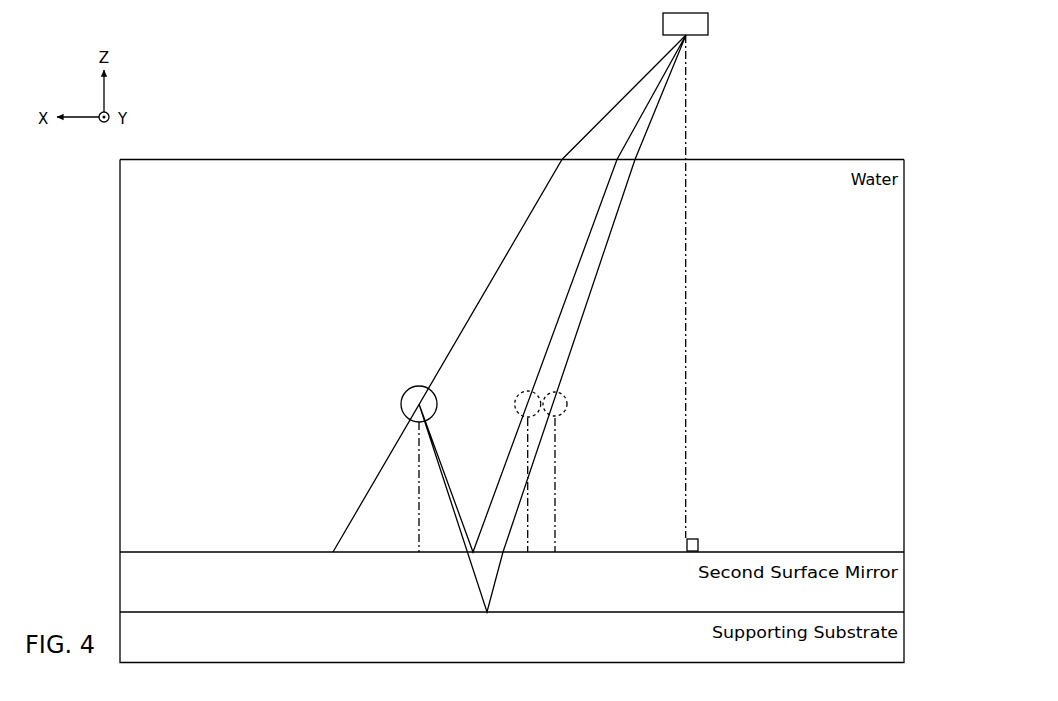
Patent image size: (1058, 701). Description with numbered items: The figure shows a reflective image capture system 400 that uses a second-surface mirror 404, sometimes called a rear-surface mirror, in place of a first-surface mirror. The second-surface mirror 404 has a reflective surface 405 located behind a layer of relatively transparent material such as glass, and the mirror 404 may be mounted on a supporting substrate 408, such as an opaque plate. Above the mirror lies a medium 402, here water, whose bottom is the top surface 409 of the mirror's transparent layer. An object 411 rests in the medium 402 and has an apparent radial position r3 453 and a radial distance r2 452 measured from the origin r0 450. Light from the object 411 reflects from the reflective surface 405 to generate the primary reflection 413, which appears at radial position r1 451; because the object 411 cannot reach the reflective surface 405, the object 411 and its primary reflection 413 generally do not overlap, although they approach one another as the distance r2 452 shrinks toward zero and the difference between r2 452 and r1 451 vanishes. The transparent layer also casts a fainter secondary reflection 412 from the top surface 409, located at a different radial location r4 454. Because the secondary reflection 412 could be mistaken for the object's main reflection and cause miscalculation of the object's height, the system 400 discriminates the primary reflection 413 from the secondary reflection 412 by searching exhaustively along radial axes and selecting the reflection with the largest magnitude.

The reflective image capture system 400 is at (879, 45).
The medium 402 is at (512, 158).
The second-surface mirror 404 is at (120, 583).
The reflective surface 405 is at (259, 609).
The supporting substrate 408 is at (710, 23).
The top surface 409 is at (227, 549).
The object 411 is at (404, 389).
The secondary reflection 412 is at (513, 389).
The primary reflection 413 is at (570, 391).
The origin r0 450 is at (686, 548).
The radial position r1 451 is at (557, 555).
The radial distance r2 452 is at (418, 549).
The apparent radial position r3 453 is at (331, 549).
The radial location r4 454 is at (530, 556).